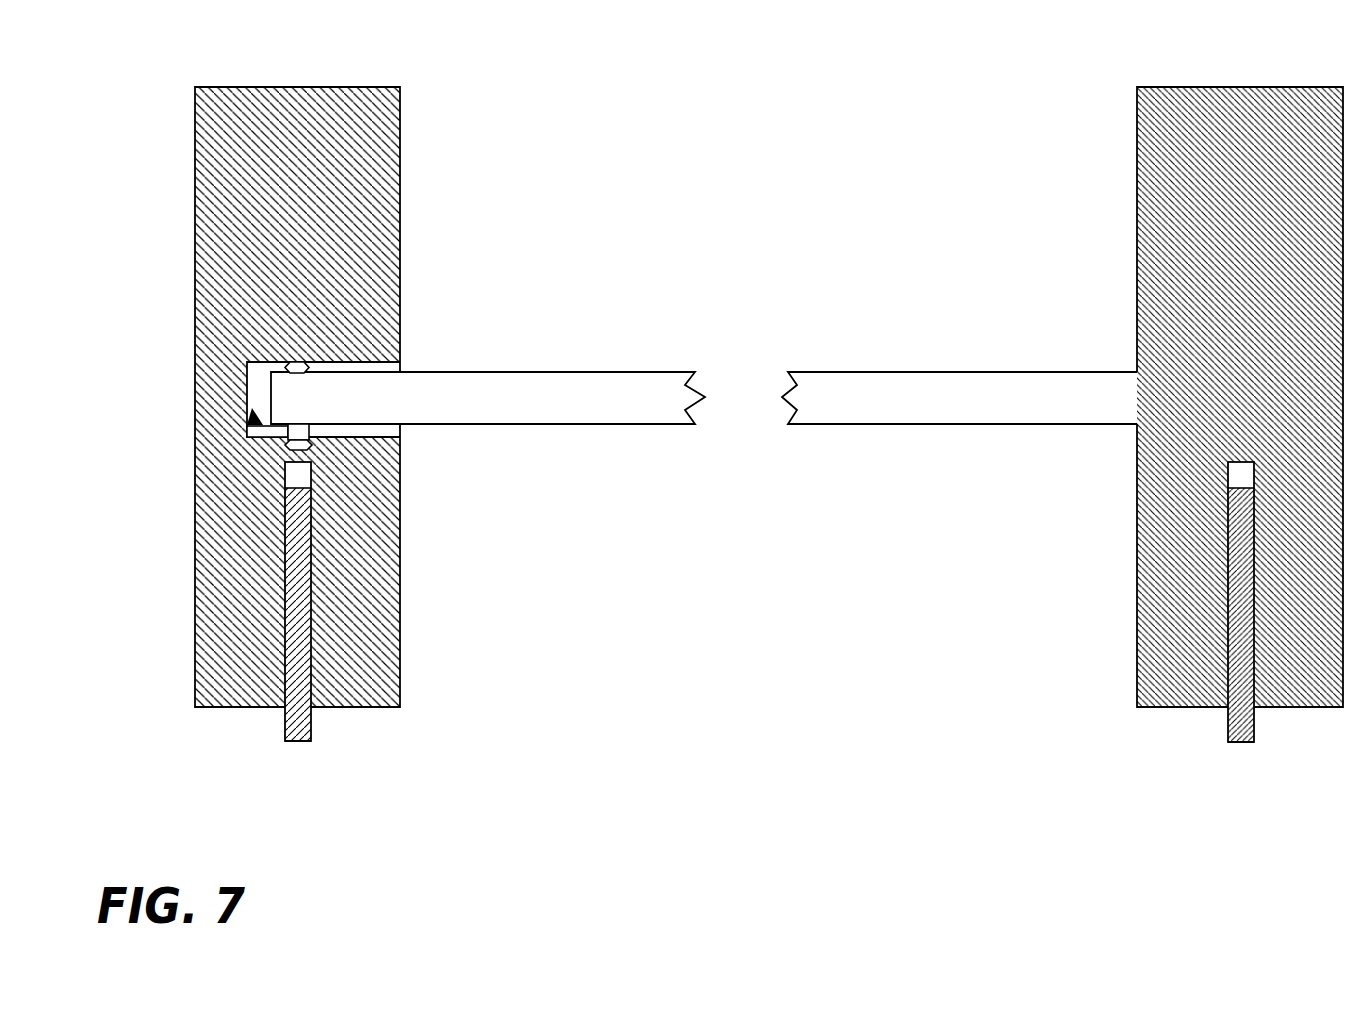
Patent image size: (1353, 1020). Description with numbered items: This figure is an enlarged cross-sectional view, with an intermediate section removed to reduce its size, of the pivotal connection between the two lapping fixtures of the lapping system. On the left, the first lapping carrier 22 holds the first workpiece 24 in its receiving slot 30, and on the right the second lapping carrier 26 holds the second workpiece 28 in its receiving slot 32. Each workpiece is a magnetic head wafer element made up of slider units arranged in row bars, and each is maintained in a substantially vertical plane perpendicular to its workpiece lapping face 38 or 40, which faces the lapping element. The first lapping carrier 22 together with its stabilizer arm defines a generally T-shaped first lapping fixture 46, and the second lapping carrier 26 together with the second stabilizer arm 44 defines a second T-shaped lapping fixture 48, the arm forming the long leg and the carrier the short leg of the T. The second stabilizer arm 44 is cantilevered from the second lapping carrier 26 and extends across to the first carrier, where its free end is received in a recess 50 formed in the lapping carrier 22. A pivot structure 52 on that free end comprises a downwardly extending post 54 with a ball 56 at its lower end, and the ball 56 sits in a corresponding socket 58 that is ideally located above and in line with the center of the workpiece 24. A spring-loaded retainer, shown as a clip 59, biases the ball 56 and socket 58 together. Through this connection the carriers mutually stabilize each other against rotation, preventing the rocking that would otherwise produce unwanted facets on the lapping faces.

The first lapping carrier 22 is at (195, 122).
The first workpiece 24 is at (285, 730).
The second lapping carrier 26 is at (1137, 117).
The second workpiece 28 is at (1228, 730).
The receiving slot 30 is at (287, 480).
The receiving slot 32 is at (1227, 480).
The workpiece lapping face 38 is at (297, 742).
The workpiece lapping face 40 is at (1243, 742).
The second stabilizer arm 44 is at (580, 372).
The first lapping fixture 46 is at (450, 127).
The second lapping fixture 48 is at (1033, 203).
The recess 50 is at (247, 368).
The pivot structure 52 is at (247, 415).
The post 54 is at (247, 431).
The ball 56 is at (287, 445).
The socket 58 is at (312, 445).
The clip 59 is at (308, 368).